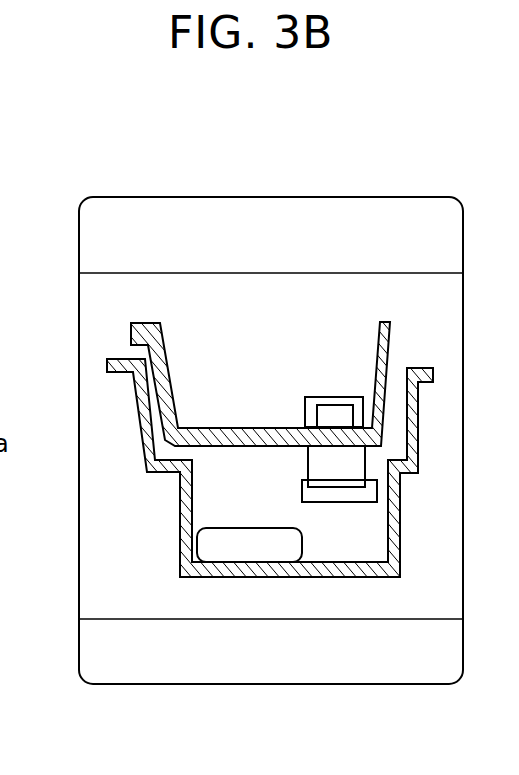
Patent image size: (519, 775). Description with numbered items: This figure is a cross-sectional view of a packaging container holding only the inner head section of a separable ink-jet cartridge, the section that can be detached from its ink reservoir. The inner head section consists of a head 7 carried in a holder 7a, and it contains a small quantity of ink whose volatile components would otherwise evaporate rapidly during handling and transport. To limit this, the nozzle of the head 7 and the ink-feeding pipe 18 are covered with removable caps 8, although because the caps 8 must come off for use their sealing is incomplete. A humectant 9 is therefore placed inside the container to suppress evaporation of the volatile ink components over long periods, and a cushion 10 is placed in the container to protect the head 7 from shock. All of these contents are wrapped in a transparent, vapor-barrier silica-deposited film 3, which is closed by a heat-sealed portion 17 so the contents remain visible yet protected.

The silica-deposited film 3 is at (236, 402).
The heat-sealed portion 17 is at (258, 197).
The holder 7a is at (223, 428).
The head 7 is at (308, 462).
The caps 8 is at (314, 397).
The ink-feeding pipe 18 is at (337, 405).
The humectant 9 is at (229, 540).
The cushion 10 is at (180, 525).